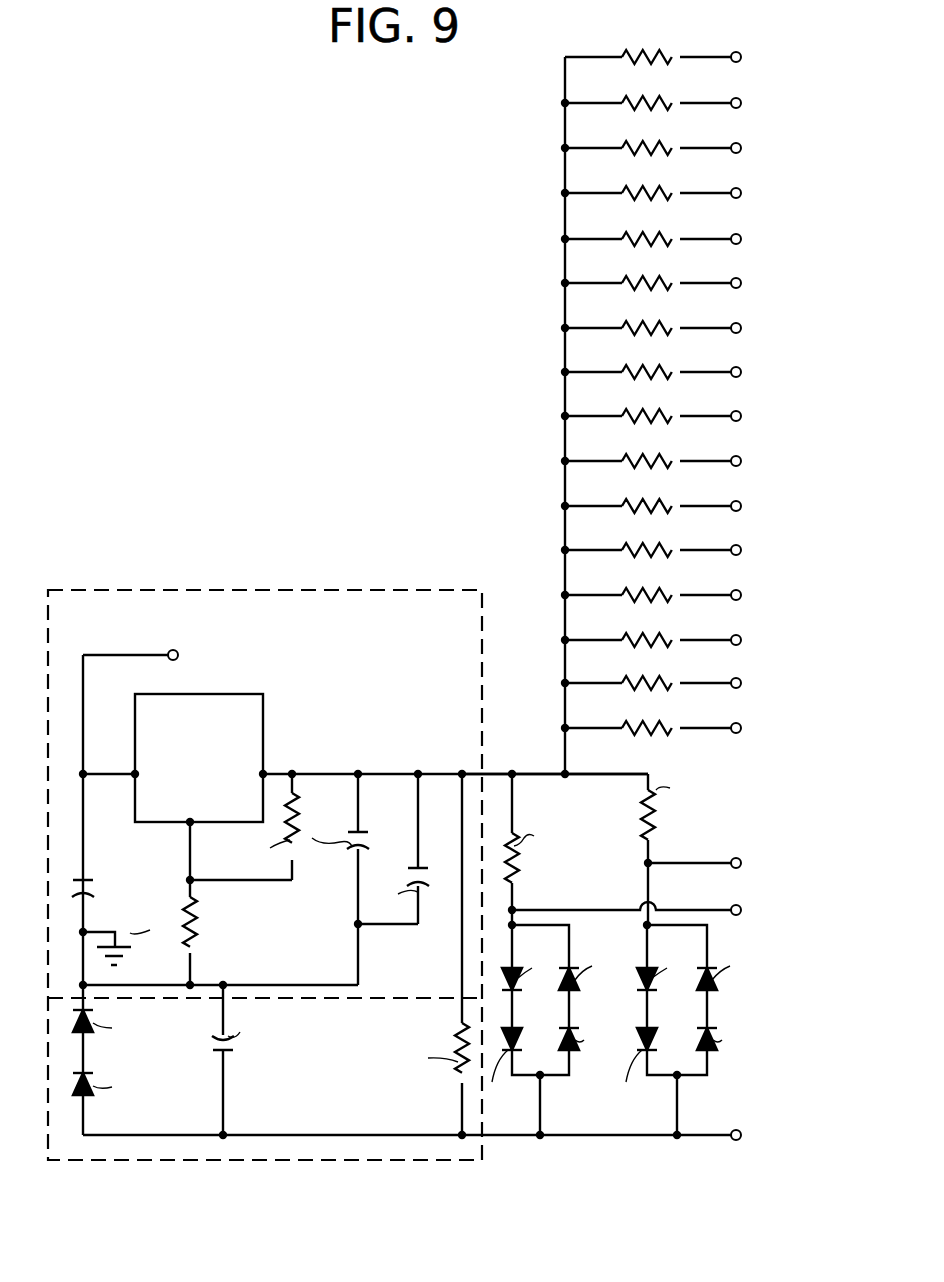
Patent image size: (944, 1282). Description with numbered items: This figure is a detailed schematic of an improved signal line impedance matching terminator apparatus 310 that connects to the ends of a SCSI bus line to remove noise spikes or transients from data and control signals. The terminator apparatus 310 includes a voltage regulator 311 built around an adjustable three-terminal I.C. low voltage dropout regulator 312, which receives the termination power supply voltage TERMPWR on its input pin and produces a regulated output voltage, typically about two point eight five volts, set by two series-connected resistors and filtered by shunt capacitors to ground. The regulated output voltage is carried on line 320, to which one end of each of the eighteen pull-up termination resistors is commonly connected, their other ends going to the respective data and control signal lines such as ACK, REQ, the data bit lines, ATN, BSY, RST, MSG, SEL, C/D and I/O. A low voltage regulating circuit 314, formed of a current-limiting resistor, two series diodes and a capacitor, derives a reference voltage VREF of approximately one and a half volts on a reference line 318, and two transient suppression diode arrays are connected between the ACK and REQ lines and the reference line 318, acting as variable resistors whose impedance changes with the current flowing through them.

The terminator apparatus 310 is at (412, 474).
The voltage regulator 311 is at (220, 590).
The low voltage dropout regulator 312 is at (264, 700).
The low voltage regulating circuit 314 is at (343, 1162).
The reference line 318 is at (596, 1138).
The line 320 is at (538, 772).